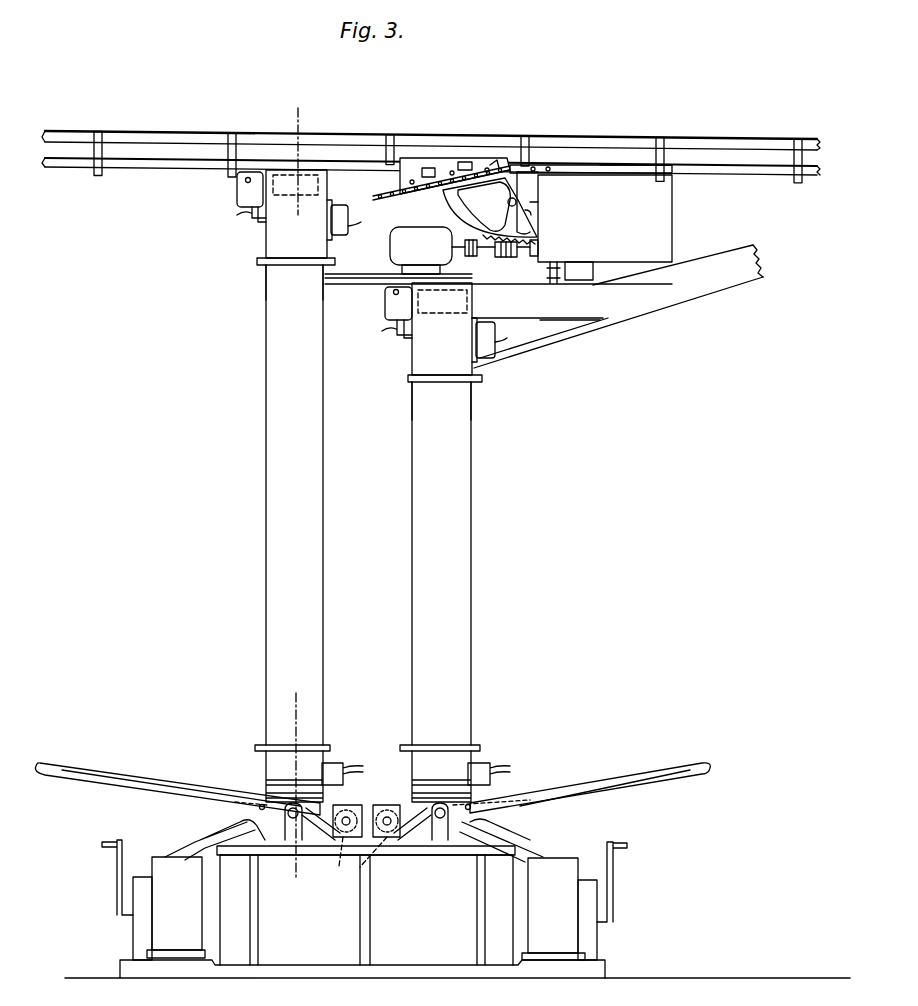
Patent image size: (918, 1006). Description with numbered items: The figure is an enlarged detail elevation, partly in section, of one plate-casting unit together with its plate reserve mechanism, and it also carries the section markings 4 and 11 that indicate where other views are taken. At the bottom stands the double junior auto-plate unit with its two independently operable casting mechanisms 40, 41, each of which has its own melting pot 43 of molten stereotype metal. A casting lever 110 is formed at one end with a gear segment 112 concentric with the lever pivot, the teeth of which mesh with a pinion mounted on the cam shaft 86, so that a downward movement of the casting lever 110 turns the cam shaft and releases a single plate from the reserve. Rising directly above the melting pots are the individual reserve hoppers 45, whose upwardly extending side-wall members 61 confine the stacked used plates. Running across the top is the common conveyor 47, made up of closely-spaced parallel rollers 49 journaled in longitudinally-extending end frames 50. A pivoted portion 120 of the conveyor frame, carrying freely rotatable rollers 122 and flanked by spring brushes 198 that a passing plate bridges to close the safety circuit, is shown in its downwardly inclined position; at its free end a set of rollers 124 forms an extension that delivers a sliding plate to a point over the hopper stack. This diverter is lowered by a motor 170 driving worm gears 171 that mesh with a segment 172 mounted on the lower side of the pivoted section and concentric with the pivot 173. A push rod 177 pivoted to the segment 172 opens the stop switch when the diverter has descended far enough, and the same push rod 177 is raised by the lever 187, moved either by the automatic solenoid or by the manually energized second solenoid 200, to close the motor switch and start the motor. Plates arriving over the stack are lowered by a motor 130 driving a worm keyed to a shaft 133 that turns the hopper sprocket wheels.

The conveyor 47 is at (113, 131).
The section line 4 is at (318, 115).
The section line 11 is at (423, 129).
The reserve hopper 45 is at (368, 486).
The side-wall members 61 is at (278, 277).
The shaft 133 is at (243, 182).
The motor 130 is at (340, 221).
The pivoted portion of the conveyor frame 120 is at (448, 172).
The spring brushes 198 is at (421, 174).
The rollers 122 is at (485, 168).
The rollers 124 is at (378, 199).
The rollers 49 is at (535, 167).
The end frames 50 is at (592, 165).
The pivot 173 is at (516, 190).
The push rod 177 is at (537, 207).
The segment 172 is at (472, 229).
The motor 170 is at (427, 250).
The worm gears 171 is at (510, 258).
The lever 187 is at (546, 278).
The second solenoid 200 is at (582, 272).
The casting lever 110 is at (143, 788).
The gear segment 112 is at (317, 823).
The cam shaft 86 is at (357, 862).
The melting pot 43 is at (366, 905).
The casting mechanism 40 is at (163, 868).
The casting mechanism 41 is at (562, 875).